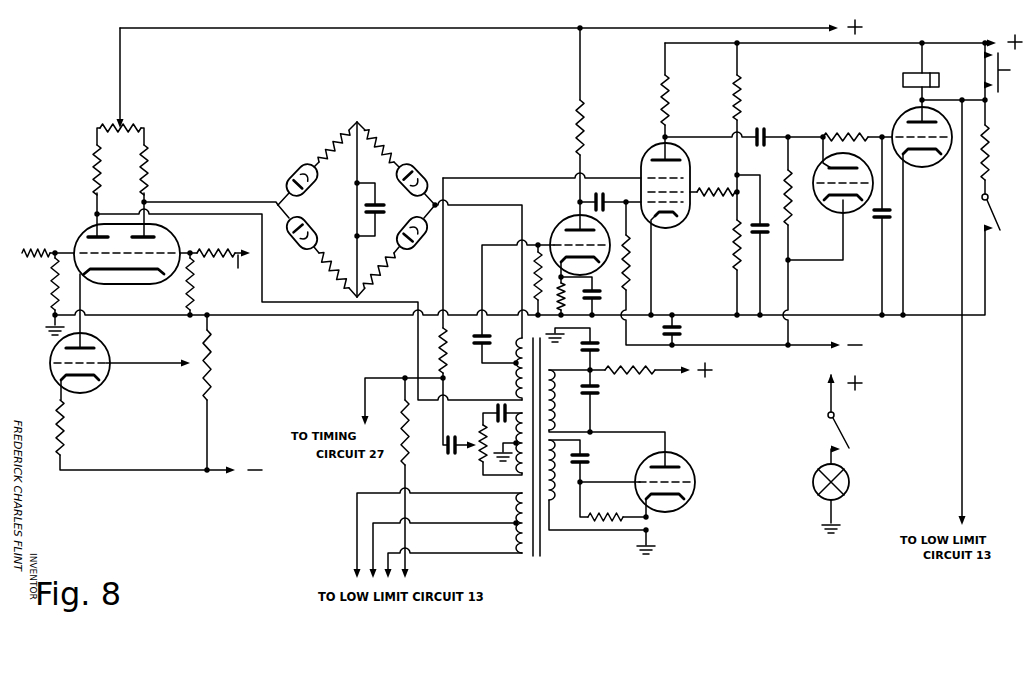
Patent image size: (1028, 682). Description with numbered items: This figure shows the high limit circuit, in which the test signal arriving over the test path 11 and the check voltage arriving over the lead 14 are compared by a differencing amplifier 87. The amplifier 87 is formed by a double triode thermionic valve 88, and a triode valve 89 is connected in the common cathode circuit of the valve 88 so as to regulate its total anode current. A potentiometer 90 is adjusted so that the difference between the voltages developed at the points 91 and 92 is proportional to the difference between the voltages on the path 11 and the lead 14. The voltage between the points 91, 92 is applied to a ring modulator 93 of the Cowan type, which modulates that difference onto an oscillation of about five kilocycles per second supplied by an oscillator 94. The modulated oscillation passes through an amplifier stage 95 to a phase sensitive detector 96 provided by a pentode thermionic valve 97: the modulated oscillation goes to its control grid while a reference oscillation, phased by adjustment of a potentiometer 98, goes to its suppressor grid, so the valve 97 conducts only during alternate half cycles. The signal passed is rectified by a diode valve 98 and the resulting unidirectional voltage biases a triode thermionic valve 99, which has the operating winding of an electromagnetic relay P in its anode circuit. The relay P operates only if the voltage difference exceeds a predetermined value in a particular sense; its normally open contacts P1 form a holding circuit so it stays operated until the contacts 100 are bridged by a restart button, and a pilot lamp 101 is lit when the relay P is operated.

The test path 11 is at (22, 246).
The lead 14 is at (215, 272).
The differencing amplifier 87 is at (110, 261).
The double triode thermionic valve 88 is at (76, 236).
The triode valve 89 is at (105, 381).
The potentiometer 90 is at (110, 127).
The point 91 is at (95, 213).
The point 92 is at (146, 201).
The ring modulator 93 is at (349, 195).
The oscillator 94 is at (624, 474).
The amplifier stage 95 is at (578, 258).
The phase sensitive detector 96 is at (661, 223).
The pentode thermionic valve 97 is at (642, 157).
The potentiometer / diode valve 98 is at (480, 438).
The triode thermionic valve 99 is at (943, 158).
The contacts 100 is at (1003, 150).
The pilot lamp 101 is at (849, 483).
The electromagnetic relay P is at (903, 80).
The normally open contacts P1 is at (1002, 213).